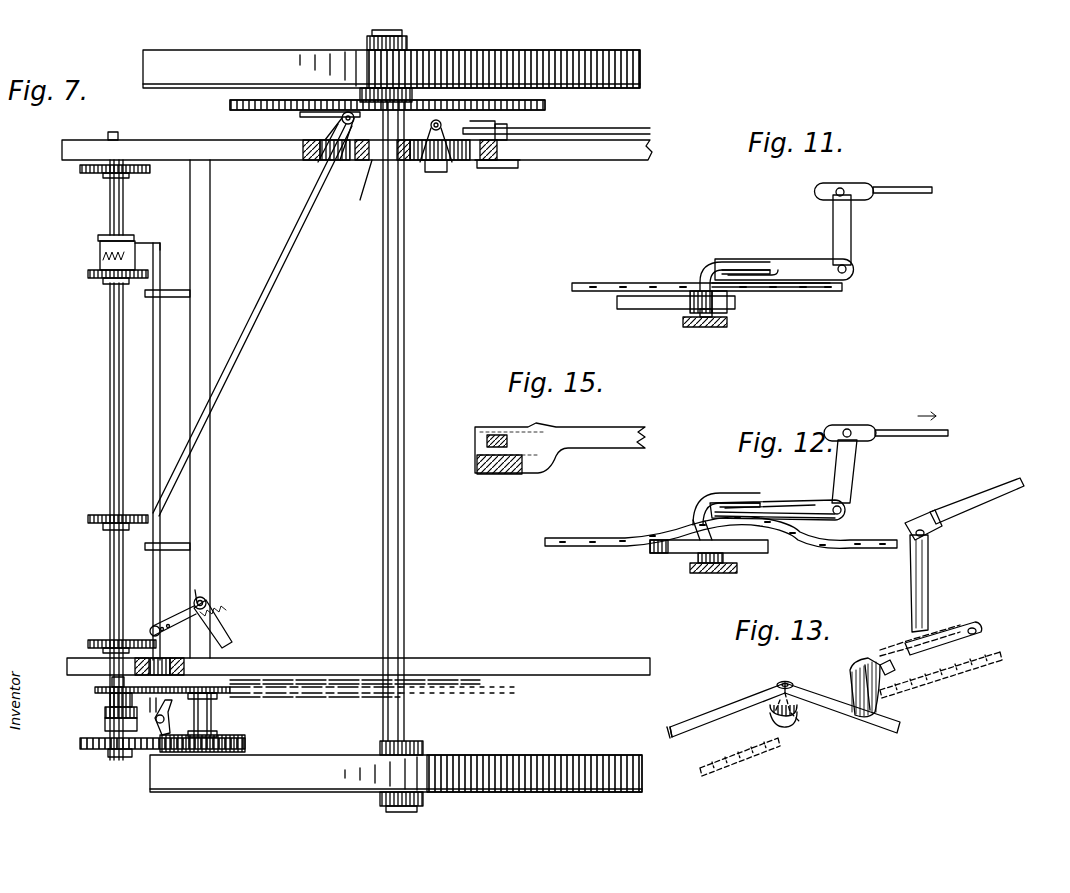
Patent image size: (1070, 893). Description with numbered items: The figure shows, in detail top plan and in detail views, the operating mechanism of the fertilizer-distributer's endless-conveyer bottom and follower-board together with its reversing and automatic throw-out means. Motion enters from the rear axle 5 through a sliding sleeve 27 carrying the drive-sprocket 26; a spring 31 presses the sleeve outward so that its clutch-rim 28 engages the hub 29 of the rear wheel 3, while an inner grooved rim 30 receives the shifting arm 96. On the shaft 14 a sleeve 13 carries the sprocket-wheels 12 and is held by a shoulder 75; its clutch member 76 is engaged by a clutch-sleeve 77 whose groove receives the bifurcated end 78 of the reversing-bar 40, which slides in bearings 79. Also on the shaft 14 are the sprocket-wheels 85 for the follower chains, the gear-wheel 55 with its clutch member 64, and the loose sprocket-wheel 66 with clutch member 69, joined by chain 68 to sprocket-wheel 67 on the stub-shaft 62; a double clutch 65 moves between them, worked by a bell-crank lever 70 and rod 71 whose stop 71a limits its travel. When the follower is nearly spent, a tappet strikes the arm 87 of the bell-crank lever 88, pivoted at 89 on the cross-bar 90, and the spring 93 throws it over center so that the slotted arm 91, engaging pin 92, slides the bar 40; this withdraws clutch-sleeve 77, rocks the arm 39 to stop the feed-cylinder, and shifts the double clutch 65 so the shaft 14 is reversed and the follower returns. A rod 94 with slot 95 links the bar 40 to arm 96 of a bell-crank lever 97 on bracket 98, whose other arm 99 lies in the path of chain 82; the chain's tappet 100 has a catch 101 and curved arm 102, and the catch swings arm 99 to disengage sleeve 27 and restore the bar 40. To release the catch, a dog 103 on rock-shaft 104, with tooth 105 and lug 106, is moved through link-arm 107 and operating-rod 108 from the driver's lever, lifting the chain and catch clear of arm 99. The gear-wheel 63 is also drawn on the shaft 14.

In FIG. 7, the rear wheel 3 is at (228, 54).
In FIG. 7, the rear axle 5 is at (403, 421).
In FIG. 7, the sprocket-wheels 12 is at (90, 276).
In FIG. 7, the sleeve 13 is at (110, 427).
In FIG. 7, the shaft 14 is at (112, 206).
In FIG. 7, the drive-sprocket 26 is at (230, 104).
In FIG. 7, the sliding sleeve 27 is at (300, 114).
In FIG. 7, the clutch-rim 28 is at (358, 82).
In FIG. 7, the hub 29 is at (407, 42).
In FIG. 7, the grooved rim 30 is at (352, 158).
In FIG. 7, the spring 31 is at (357, 189).
In FIG. 7, the arm 39 is at (160, 736).
In FIG. 7, the reversing-bar 40 is at (152, 445).
In FIG. 15, the reversing-bar 40 is at (490, 475).
In FIG. 7, the gear-wheel 55 is at (110, 757).
In FIG. 7, the stub-shaft 62 is at (216, 730).
In FIG. 7, the gear 63 is at (245, 744).
In FIG. 7, the clutch member 64 is at (100, 740).
In FIG. 7, the double clutch 65 is at (105, 724).
In FIG. 7, the sprocket-wheel 66 is at (95, 690).
In FIG. 7, the sprocket-wheel 67 is at (232, 690).
In FIG. 7, the chain 68 is at (165, 712).
In FIG. 7, the clutch member 69 is at (110, 698).
In FIG. 7, the bell-crank lever 70 is at (185, 668).
In FIG. 15, the bell-crank lever 70 is at (494, 436).
In FIG. 7, the rod 71 is at (362, 684).
In FIG. 15, the rod 71 is at (586, 436).
In FIG. 15, the stop 71a is at (534, 468).
In FIG. 7, the shoulder 75 is at (104, 530).
In FIG. 7, the clutch member 76 is at (100, 258).
In FIG. 7, the clutch-sleeve 77 is at (98, 242).
In FIG. 7, the bifurcated end 78 is at (140, 243).
In FIG. 7, the bearings 79 is at (168, 295).
In FIG. 11, the chain 82 is at (600, 285).
In FIG. 12, the chain 82 is at (605, 548).
In FIG. 13, the chain 82 is at (755, 765).
In FIG. 7, the sprocket-wheels 85 is at (80, 169).
In FIG. 7, the arm 87 is at (214, 620).
In FIG. 7, the bell-crank lever 88 is at (206, 598).
In FIG. 7, the pivot 89 is at (208, 606).
In FIG. 7, the cross-bar 90 is at (206, 464).
In FIG. 7, the arm 91 is at (181, 600).
In FIG. 7, the pin 92 is at (165, 632).
In FIG. 7, the spring 93 is at (202, 597).
In FIG. 7, the rod 94 is at (242, 348).
In FIG. 7, the slot 95 is at (334, 165).
In FIG. 7, the arm 96 is at (342, 120).
In FIG. 13, the arm 96 is at (668, 732).
In FIG. 7, the bell-crank lever 97 is at (472, 136).
In FIG. 11, the bell-crank lever 97 is at (645, 300).
In FIG. 12, the bell-crank lever 97 is at (652, 554).
In FIG. 13, the bell-crank lever 97 is at (735, 706).
In FIG. 7, the bracket 98 is at (446, 160).
In FIG. 7, the arm 99 is at (426, 170).
In FIG. 11, the arm 99 is at (722, 310).
In FIG. 12, the arm 99 is at (700, 556).
In FIG. 13, the arm 99 is at (878, 738).
In FIG. 12, the tappet 100 is at (698, 516).
In FIG. 13, the tappet 100 is at (803, 690).
In FIG. 11, the catch 101 is at (727, 302).
In FIG. 12, the catch 101 is at (706, 528).
In FIG. 13, the catch 101 is at (805, 740).
In FIG. 11, the curved arm 102 is at (765, 268).
In FIG. 12, the curved arm 102 is at (760, 505).
In FIG. 13, the curved arm 102 is at (868, 676).
In FIG. 11, the dog 103 is at (730, 262).
In FIG. 12, the dog 103 is at (727, 493).
In FIG. 13, the dog 103 is at (897, 672).
In FIG. 7, the rock-shaft 104 is at (484, 163).
In FIG. 11, the rock-shaft 104 is at (855, 269).
In FIG. 12, the rock-shaft 104 is at (849, 510).
In FIG. 13, the rock-shaft 104 is at (945, 632).
In FIG. 11, the tooth 105 is at (703, 278).
In FIG. 12, the tooth 105 is at (693, 515).
In FIG. 13, the tooth 105 is at (880, 705).
In FIG. 11, the lug 106 is at (760, 262).
In FIG. 12, the lug 106 is at (775, 509).
In FIG. 13, the lug 106 is at (900, 648).
In FIG. 7, the link-arm 107 is at (500, 142).
In FIG. 11, the link-arm 107 is at (852, 230).
In FIG. 12, the link-arm 107 is at (852, 470).
In FIG. 13, the link-arm 107 is at (928, 574).
In FIG. 7, the operating-rod 108 is at (600, 128).
In FIG. 11, the operating-rod 108 is at (900, 188).
In FIG. 12, the operating-rod 108 is at (900, 420).
In FIG. 13, the operating-rod 108 is at (1008, 482).